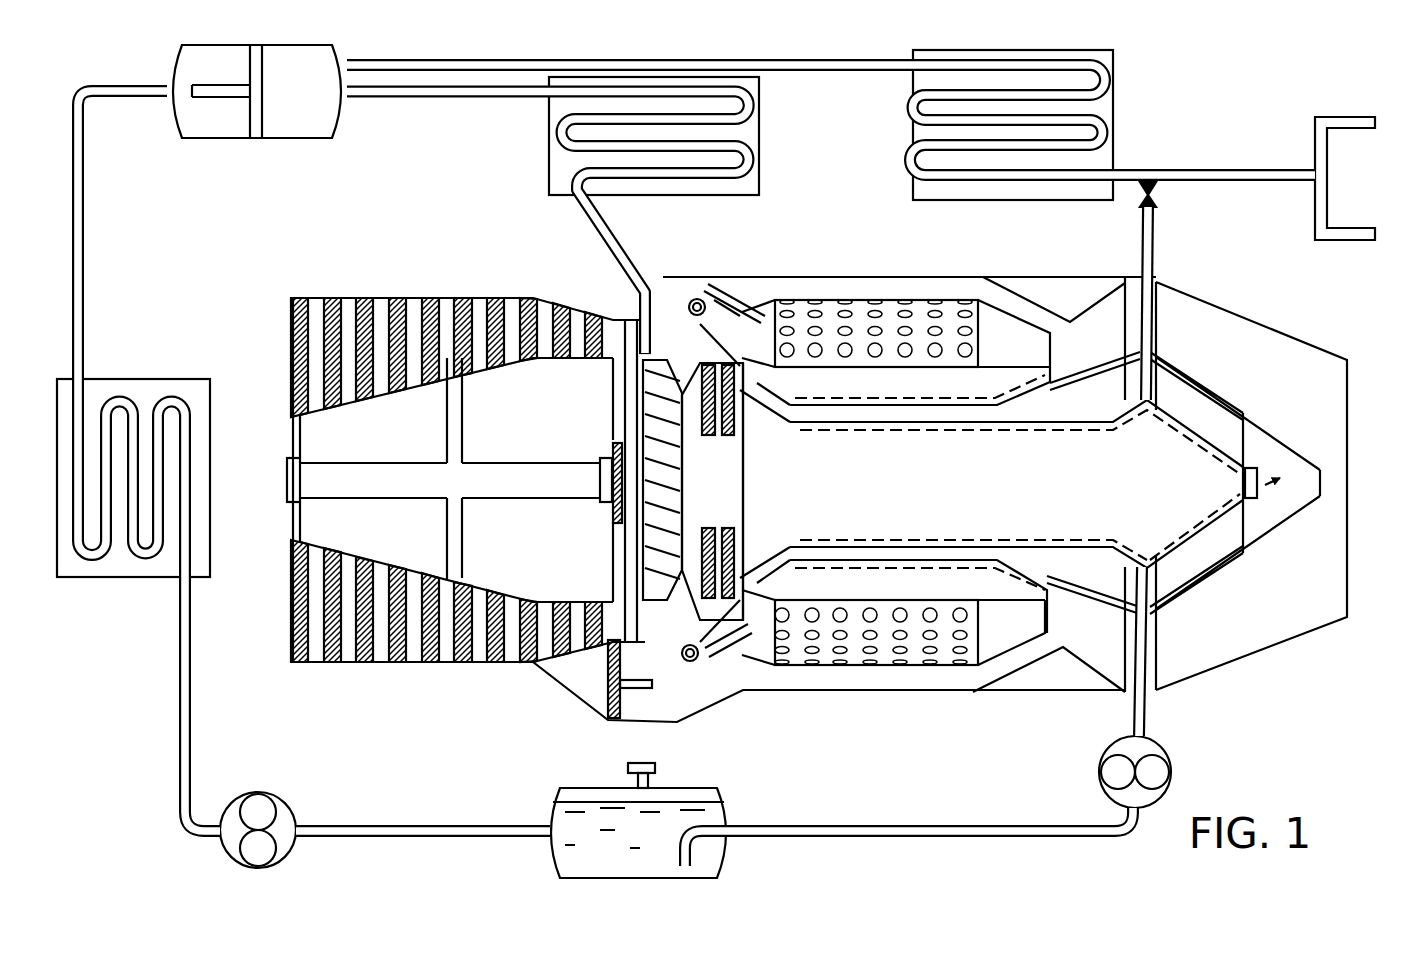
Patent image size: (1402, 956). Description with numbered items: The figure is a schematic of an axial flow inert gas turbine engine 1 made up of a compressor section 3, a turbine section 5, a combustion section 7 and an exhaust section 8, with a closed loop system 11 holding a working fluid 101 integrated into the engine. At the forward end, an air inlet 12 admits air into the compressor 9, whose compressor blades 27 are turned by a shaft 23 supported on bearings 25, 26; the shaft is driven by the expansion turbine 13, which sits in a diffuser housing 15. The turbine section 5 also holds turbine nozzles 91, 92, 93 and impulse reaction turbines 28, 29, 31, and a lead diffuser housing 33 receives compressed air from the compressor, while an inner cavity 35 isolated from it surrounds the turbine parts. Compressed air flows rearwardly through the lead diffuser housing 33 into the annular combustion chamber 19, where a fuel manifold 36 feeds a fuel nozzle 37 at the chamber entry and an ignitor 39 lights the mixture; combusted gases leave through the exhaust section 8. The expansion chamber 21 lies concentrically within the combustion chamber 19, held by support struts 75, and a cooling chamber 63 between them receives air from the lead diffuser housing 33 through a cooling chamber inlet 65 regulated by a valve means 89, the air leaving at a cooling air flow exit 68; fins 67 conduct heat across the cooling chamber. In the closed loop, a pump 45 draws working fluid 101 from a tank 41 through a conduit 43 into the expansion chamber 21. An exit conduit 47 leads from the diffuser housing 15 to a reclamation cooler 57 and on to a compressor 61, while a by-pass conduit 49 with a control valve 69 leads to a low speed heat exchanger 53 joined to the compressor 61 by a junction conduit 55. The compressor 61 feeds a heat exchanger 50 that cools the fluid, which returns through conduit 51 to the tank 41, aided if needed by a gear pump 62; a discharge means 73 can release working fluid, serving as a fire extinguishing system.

The axial flow turbine engine 1 is at (830, 716).
The compressor section 3 is at (403, 672).
The turbine section 5 is at (675, 262).
The combustion section 7 is at (903, 251).
The exhaust section 8 is at (1279, 315).
The compressor 9 is at (290, 615).
The closed loop system 11 is at (440, 810).
The air inlet 12 is at (266, 318).
The expansion turbine 13 is at (645, 597).
The diffuser housing 15 is at (628, 350).
The combustion chamber 19 is at (832, 310).
The expansion chamber 21 is at (975, 490).
The shaft 23 is at (514, 490).
The bearing 25 is at (303, 455).
The bearing 26 is at (597, 455).
The compressor blades 27 is at (400, 388).
The impulse reaction turbine 28 is at (717, 600).
The impulse reaction turbine 29 is at (733, 562).
The impulse reaction turbine 31 is at (758, 500).
The lead diffuser housing 33 is at (662, 313).
The inner cavity 35 is at (680, 598).
The fuel manifold 36 is at (694, 297).
The fuel nozzle 37 is at (716, 300).
The ignitor 39 is at (770, 292).
The tank 41 is at (683, 790).
The conduit 43 is at (915, 828).
The pump 45 is at (1148, 745).
The exit conduit 47 is at (587, 214).
The by-pass conduit 49 is at (1152, 240).
The heat exchanger 50 is at (120, 565).
The conduit 51 is at (362, 830).
The low speed heat exchanger 53 is at (1095, 108).
The junction conduit 55 is at (836, 71).
The reclamation cooler 57 is at (750, 148).
The compressor 61 is at (295, 122).
The gear pump 62 is at (287, 818).
The cooling chamber 63 is at (888, 547).
The cooling chamber inlet 65 is at (689, 407).
The fins 67 is at (1235, 438).
The cooling air flow exit 68 is at (1322, 497).
The control valve 69 is at (1156, 197).
The discharge means 73 is at (1350, 241).
The support struts 75 is at (1157, 322).
The valve means 89 is at (688, 291).
The turbine nozzle 91 is at (750, 292).
The turbine nozzle 92 is at (720, 417).
The turbine nozzle 93 is at (737, 427).
The working fluid 101 is at (595, 833).